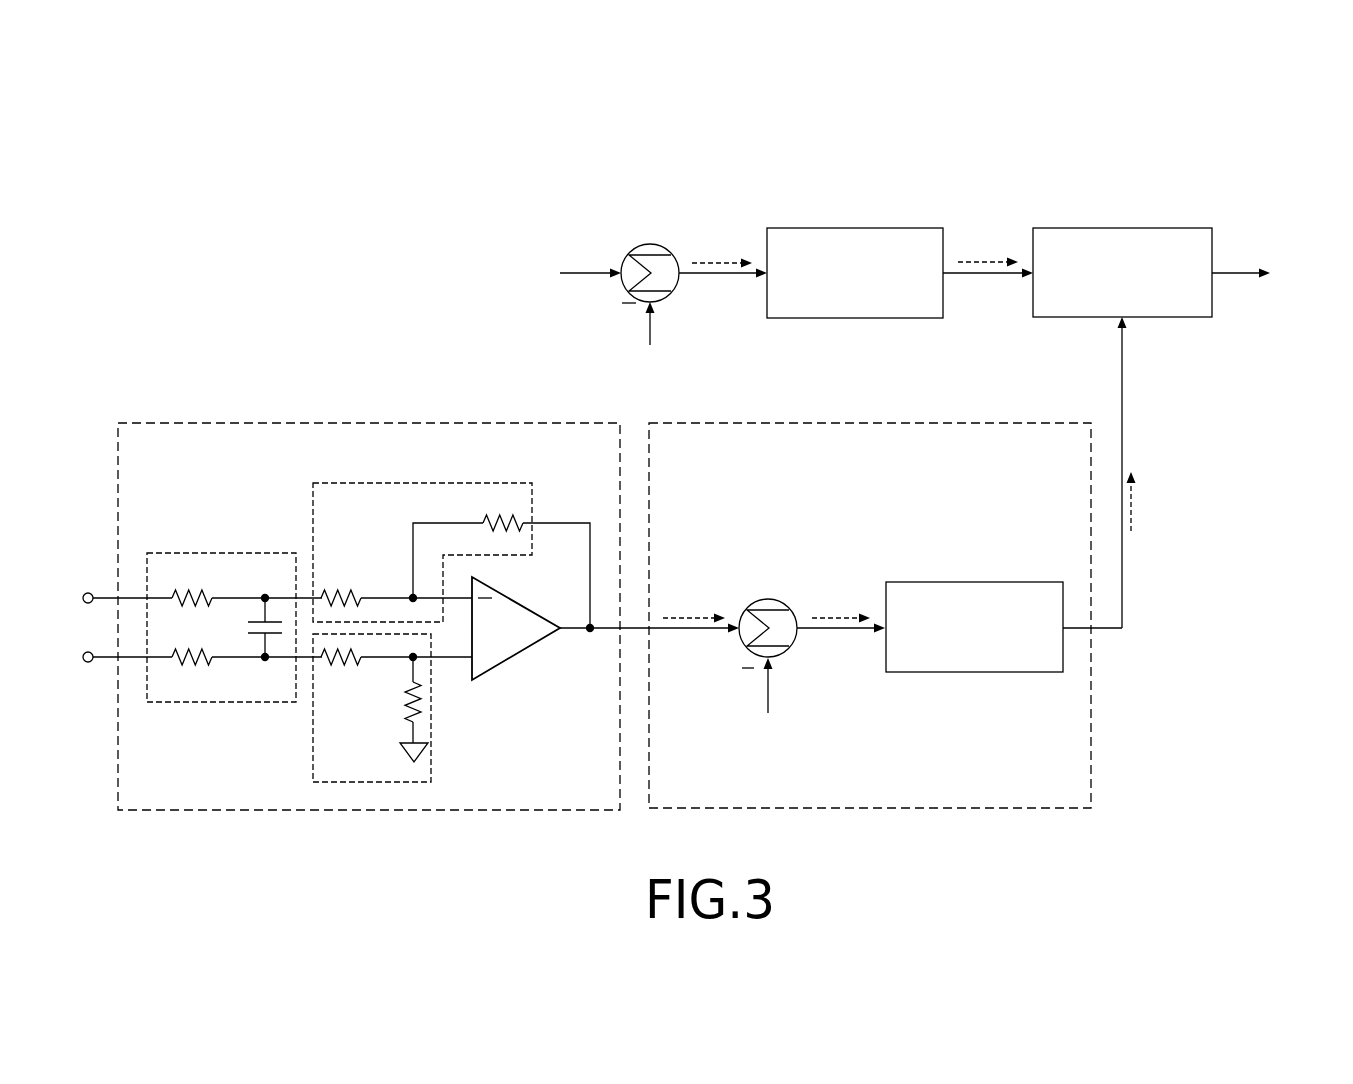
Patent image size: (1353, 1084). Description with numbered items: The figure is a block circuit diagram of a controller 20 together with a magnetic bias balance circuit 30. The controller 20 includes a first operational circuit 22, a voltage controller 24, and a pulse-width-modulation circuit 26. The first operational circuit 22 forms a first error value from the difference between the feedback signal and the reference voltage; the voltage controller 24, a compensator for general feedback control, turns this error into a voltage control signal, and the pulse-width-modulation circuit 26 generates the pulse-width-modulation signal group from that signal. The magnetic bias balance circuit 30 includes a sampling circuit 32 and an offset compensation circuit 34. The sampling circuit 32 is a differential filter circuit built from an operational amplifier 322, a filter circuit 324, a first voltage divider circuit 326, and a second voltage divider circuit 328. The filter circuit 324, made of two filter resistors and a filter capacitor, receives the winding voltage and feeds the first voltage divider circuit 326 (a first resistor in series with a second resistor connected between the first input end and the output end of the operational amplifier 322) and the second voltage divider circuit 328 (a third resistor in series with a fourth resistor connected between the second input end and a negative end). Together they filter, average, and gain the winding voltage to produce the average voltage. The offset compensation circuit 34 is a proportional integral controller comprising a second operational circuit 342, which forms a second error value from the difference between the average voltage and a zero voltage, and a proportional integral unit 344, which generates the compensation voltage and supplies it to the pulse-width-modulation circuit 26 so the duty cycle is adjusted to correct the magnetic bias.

The controller 20 is at (1058, 146).
The first operational circuit 22 is at (650, 245).
The voltage controller 24 is at (858, 228).
The PWM circuit 26 is at (1122, 235).
The magnetic bias balance circuit 30 is at (291, 388).
The sampling circuit 32 is at (370, 428).
The offset compensation circuit 34 is at (886, 428).
The operational amplifier 322 is at (512, 640).
The filter circuit 324 is at (218, 553).
The first voltage divider circuit 326 is at (420, 487).
The second voltage divider circuit 328 is at (312, 735).
The second operational circuit 342 is at (768, 598).
The proportional integral unit 344 is at (973, 588).